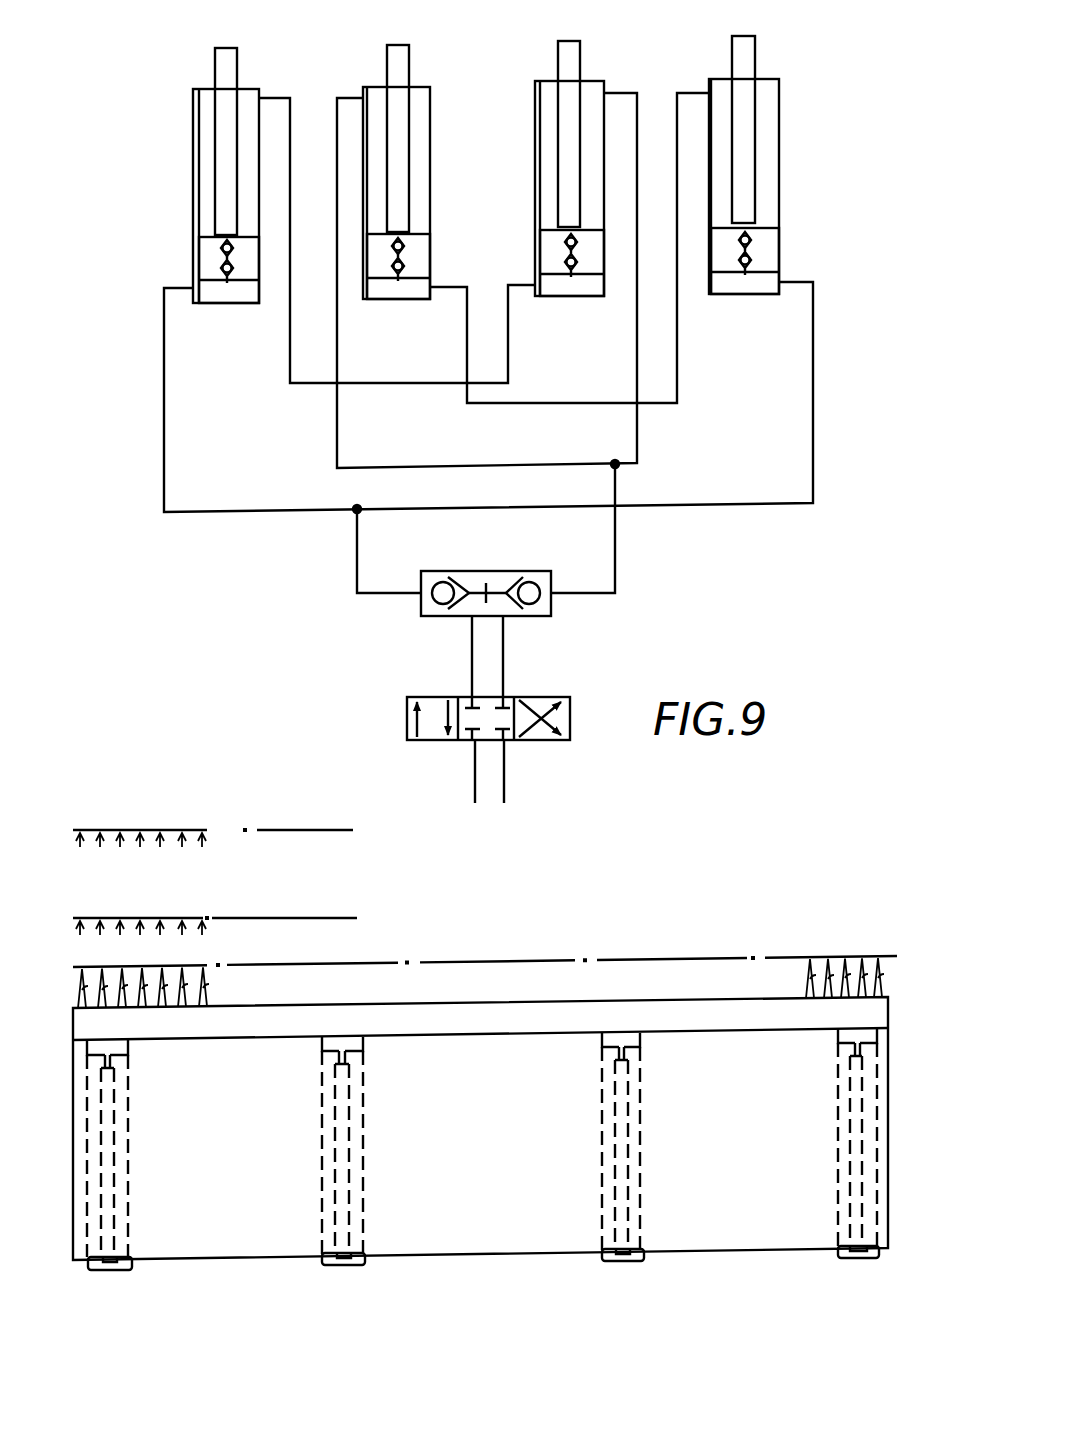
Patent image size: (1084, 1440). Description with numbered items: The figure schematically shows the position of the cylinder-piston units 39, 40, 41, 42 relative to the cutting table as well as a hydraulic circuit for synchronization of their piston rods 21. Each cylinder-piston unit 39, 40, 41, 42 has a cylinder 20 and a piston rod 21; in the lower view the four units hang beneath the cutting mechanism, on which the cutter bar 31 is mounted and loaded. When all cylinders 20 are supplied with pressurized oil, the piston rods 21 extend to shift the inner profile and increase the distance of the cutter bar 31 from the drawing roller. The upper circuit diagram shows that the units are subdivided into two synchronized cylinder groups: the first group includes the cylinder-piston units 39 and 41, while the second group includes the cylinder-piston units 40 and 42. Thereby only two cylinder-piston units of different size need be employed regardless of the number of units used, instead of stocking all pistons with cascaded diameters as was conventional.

The cylinder 20 is at (205, 115).
The piston rod 21 is at (220, 63).
The cutter bar 31 is at (200, 917).
The cylinder-piston unit 39 is at (213, 305).
The cylinder-piston unit 40 is at (412, 298).
The cylinder-piston unit 41 is at (586, 298).
The cylinder-piston unit 42 is at (726, 298).